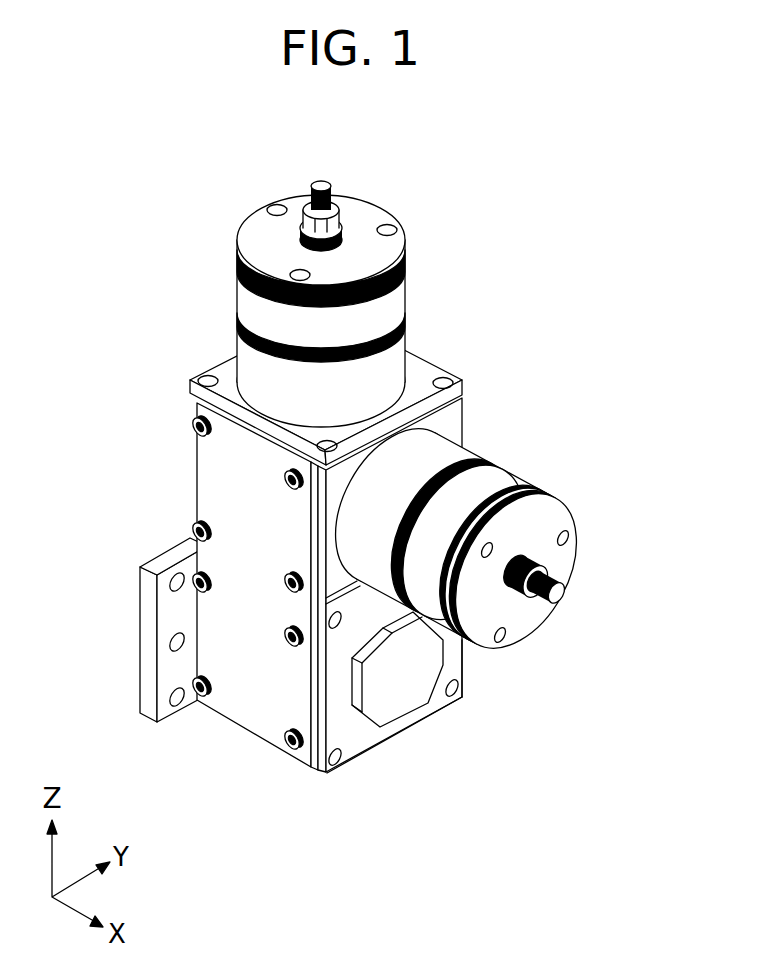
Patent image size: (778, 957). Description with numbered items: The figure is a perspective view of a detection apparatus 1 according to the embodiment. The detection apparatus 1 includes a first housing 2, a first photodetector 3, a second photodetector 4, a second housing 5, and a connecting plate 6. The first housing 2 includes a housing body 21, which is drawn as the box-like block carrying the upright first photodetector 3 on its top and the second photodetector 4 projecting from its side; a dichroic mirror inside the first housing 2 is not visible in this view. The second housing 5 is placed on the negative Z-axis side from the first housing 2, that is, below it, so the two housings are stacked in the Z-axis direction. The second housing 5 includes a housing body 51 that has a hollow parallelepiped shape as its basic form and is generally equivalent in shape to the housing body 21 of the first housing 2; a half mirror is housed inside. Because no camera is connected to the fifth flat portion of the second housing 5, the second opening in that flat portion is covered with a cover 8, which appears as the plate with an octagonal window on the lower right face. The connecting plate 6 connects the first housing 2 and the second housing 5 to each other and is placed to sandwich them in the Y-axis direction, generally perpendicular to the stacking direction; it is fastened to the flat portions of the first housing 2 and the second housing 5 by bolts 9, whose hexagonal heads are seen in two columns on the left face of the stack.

The detection apparatus 1 is at (637, 171).
The first housing 2 is at (463, 424).
The housing body 21 is at (452, 412).
The first photodetector 3 is at (392, 303).
The second photodetector 4 is at (500, 483).
The second housing 5 is at (466, 688).
The housing body 51 is at (360, 735).
The connecting plate 6 is at (230, 705).
The cover 8 is at (403, 703).
The bolts 9 is at (290, 743).